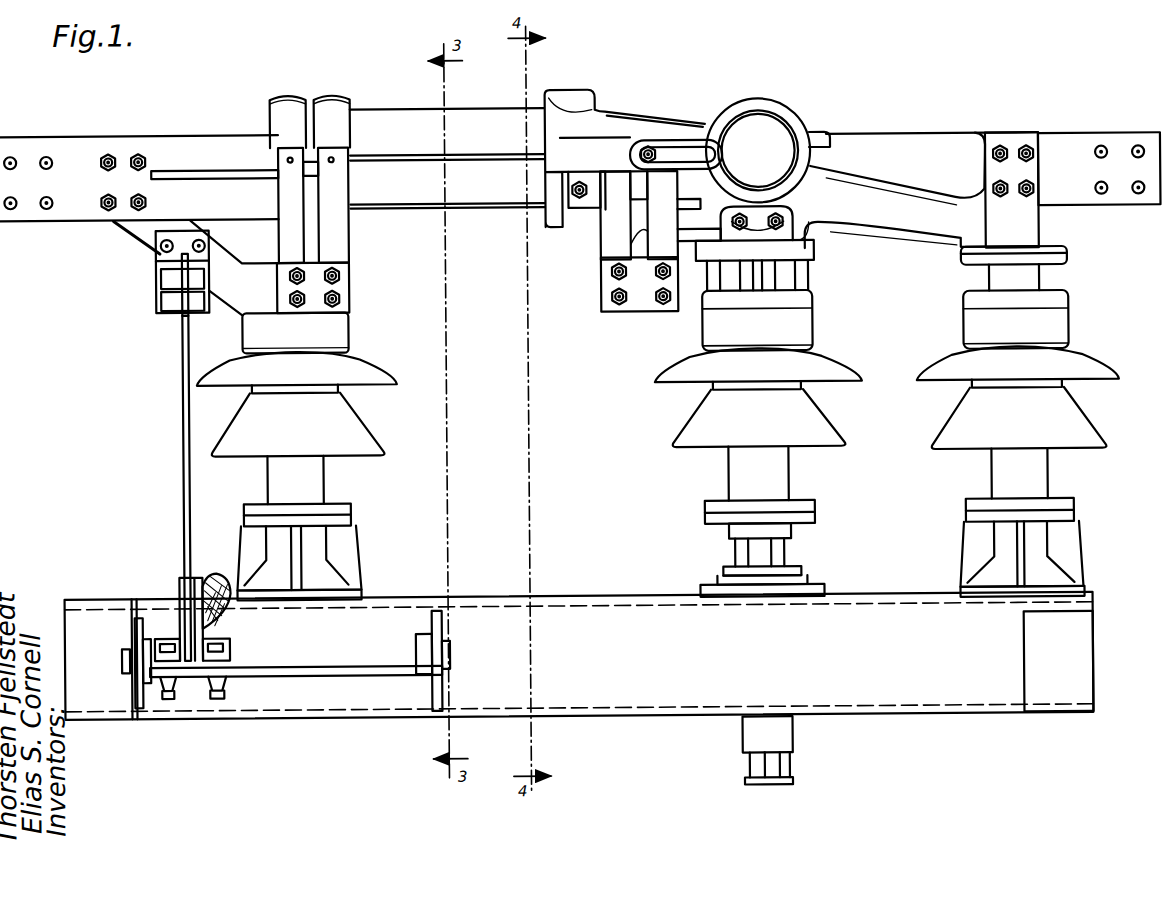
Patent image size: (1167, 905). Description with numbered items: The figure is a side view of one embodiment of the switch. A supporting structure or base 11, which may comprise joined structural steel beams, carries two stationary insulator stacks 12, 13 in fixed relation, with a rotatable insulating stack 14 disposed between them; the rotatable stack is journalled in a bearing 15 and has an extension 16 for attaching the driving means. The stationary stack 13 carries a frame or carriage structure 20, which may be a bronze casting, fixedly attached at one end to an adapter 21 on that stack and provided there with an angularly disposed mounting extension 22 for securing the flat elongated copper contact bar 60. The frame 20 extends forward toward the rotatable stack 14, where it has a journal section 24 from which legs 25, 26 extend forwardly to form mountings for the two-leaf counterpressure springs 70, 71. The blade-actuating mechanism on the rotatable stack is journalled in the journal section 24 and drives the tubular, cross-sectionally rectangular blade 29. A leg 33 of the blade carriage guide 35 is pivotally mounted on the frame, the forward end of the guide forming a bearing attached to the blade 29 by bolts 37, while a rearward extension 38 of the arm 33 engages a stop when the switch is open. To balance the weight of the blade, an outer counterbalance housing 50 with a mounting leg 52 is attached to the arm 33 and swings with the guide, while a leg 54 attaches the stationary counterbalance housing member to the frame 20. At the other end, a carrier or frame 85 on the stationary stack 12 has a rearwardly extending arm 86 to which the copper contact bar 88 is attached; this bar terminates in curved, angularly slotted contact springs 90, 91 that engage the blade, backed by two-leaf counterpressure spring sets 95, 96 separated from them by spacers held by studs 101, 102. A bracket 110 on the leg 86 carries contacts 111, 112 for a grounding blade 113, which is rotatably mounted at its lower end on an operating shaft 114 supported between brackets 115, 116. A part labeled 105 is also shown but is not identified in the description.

The supporting structure or base 11 is at (572, 611).
The stationary insulator stack 12 is at (366, 420).
The stationary insulator stack 13 is at (1098, 420).
The rotatable insulating stack 14 is at (672, 422).
The bearing 15 is at (805, 577).
The extension 16 is at (787, 744).
The frame or carriage structure 20 is at (928, 237).
The adapter 21 is at (1050, 278).
The mounting extension 22 is at (1042, 162).
The journal section 24 is at (817, 254).
The leg 25 is at (686, 245).
The leg 26 is at (776, 277).
The blade 29 is at (484, 204).
The leg of blade carriage guide 33 is at (688, 122).
The blade carriage guide 35 is at (580, 94).
The bolts 37 is at (583, 208).
The rearward extension of arm 38 is at (828, 134).
The outer counterbalance housing 50 is at (770, 128).
The mounting leg 52 is at (666, 150).
The leg 54 is at (795, 215).
The contact bar 60 is at (875, 152).
The counterpressure spring 70 is at (610, 244).
The counterpressure spring 71 is at (656, 194).
The carrier or frame 85 is at (258, 270).
The rearwardly-extending arm 86 is at (130, 231).
The contact bar 88 is at (77, 140).
The contact spring 90 is at (290, 100).
The contact spring 91 is at (335, 100).
The counterpressure spring set 95 is at (285, 195).
The counterpressure spring set 96 is at (340, 200).
The stud 101 is at (290, 158).
The stud 102 is at (337, 158).
The blade bar 105 is at (432, 152).
The bracket 110 is at (162, 252).
The contact 111 is at (160, 308).
The contact 112 is at (215, 300).
The grounding blade 113 is at (183, 427).
The shaft 114 is at (270, 670).
The bracket 115 is at (138, 700).
The bracket 116 is at (442, 696).